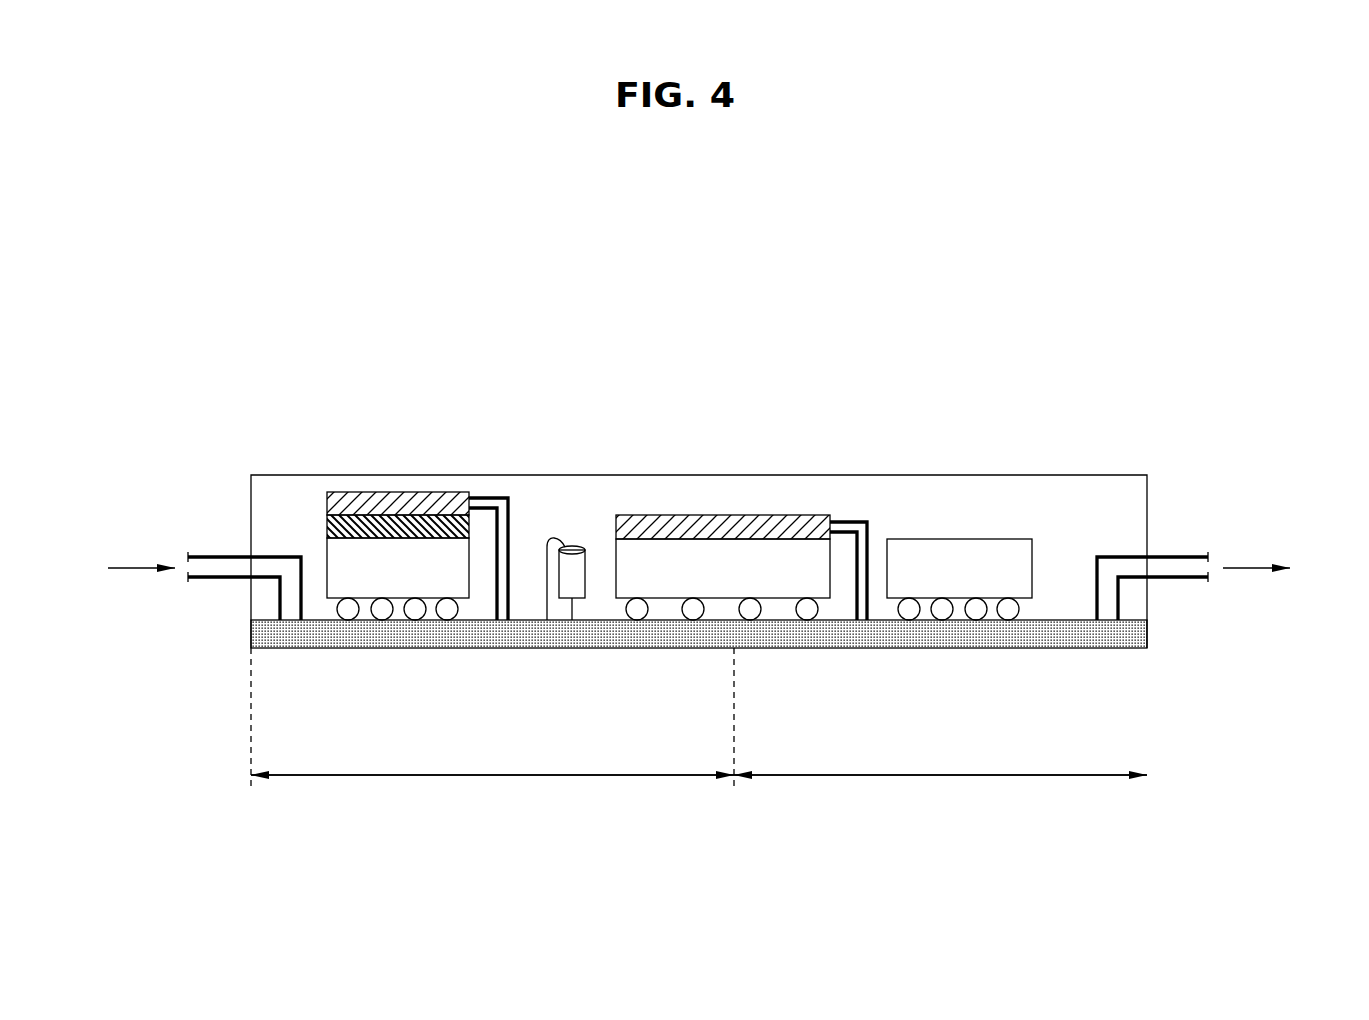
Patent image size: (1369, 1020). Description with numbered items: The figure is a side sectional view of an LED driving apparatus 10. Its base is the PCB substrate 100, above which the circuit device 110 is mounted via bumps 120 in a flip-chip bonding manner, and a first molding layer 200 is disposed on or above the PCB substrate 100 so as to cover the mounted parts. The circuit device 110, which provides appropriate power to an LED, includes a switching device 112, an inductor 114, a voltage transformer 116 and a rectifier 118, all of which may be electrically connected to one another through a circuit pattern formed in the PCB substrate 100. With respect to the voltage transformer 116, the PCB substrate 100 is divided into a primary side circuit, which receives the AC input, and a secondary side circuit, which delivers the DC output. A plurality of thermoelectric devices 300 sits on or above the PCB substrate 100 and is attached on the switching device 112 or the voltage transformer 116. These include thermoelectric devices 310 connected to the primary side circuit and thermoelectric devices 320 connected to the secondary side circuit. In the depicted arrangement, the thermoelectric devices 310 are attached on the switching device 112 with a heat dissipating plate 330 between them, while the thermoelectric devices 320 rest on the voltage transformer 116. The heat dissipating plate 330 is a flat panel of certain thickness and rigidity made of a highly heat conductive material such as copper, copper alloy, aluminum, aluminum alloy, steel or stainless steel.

The LED driving apparatus 10 is at (1050, 297).
The PCB substrate 100 is at (1135, 633).
The first molding layer 200 is at (1135, 499).
The circuit device 110 is at (433, 695).
The switching device 112 is at (497, 502).
The inductor 114 is at (565, 588).
The voltage transformer 116 is at (741, 531).
The rectifier 118 is at (959, 646).
The bump 120 is at (1008, 620).
The thermoelectric devices 300 is at (497, 413).
The thermoelectric devices connected to the primary side circuit 310 is at (398, 442).
The thermoelectric devices connected to the secondary side circuit 320 is at (672, 523).
The heat dissipating plate 330 is at (352, 525).